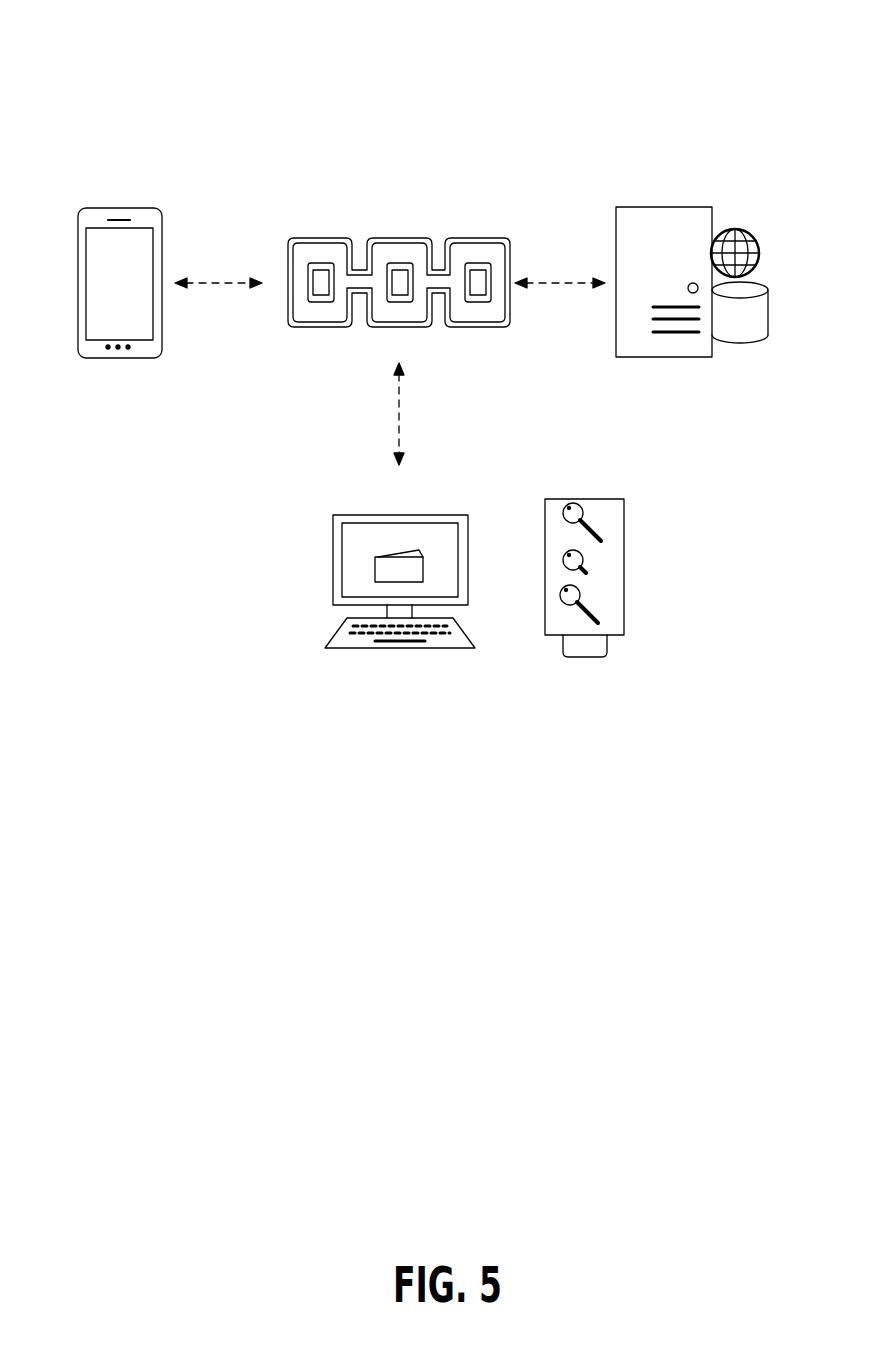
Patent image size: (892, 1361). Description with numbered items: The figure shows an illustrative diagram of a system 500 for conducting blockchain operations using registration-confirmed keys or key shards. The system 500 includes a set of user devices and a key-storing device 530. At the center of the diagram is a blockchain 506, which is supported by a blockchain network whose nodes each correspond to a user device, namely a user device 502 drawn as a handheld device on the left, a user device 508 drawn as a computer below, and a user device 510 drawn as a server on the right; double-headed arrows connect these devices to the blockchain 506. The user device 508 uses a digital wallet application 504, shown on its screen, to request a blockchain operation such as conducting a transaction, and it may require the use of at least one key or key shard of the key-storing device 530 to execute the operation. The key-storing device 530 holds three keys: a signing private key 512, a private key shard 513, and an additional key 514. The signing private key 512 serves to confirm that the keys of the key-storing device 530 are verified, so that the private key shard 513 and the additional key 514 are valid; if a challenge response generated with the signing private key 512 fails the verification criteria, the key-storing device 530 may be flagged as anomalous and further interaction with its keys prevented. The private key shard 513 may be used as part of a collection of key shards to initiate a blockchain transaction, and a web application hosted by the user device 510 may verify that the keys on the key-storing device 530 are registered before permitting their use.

The system 500 is at (128, 36).
The user device 502 is at (120, 207).
The digital wallet application 504 is at (373, 560).
The blockchain 506 is at (465, 242).
The user device 508 is at (433, 515).
The user device 510 is at (747, 233).
The signing private key 512 is at (588, 519).
The private key shard 513 is at (588, 564).
The additional key 514 is at (588, 603).
The key-storing device 530 is at (579, 499).